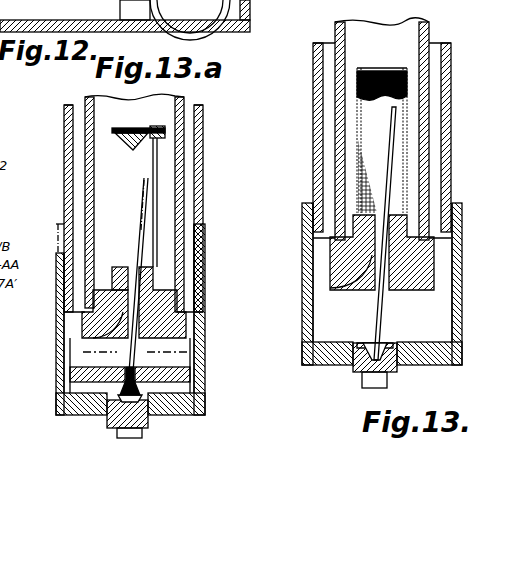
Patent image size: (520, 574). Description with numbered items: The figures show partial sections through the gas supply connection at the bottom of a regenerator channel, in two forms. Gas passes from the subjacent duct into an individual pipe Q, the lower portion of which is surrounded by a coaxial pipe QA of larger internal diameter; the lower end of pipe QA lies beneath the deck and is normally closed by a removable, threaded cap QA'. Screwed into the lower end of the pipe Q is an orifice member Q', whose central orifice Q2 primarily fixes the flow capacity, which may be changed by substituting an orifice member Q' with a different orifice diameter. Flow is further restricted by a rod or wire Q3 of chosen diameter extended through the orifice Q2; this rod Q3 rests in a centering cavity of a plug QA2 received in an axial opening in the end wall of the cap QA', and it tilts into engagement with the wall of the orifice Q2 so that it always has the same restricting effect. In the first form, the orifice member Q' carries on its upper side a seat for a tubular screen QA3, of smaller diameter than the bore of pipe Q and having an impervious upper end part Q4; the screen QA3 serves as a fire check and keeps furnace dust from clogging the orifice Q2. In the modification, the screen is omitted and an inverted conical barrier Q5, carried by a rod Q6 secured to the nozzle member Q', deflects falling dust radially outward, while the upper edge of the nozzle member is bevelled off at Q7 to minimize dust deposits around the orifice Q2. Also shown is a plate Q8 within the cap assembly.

In FIG. 13A, the pipe Q is at (154, 203).
In FIG. 13, the pipe Q is at (355, 129).
In FIG. 13A, the coaxial pipe QA is at (151, 202).
In FIG. 13, the coaxial pipe QA is at (359, 140).
In FIG. 13A, the removable cap QA' is at (149, 320).
In FIG. 13, the removable cap QA' is at (357, 284).
In FIG. 13A, the plug QA2 is at (112, 428).
In FIG. 13, the plug QA2 is at (352, 375).
In FIG. 13, the tubular screen QA3 is at (357, 119).
In FIG. 13A, the orifice member Q' is at (75, 316).
In FIG. 13, the orifice member Q' is at (322, 252).
In FIG. 13A, the central orifice Q2 is at (93, 340).
In FIG. 13, the central orifice Q2 is at (373, 261).
In FIG. 13A, the rod or wire Q3 is at (131, 352).
In FIG. 13, the rod or wire Q3 is at (377, 319).
In FIG. 13, the impervious upper end part Q4 is at (383, 67).
In FIG. 13A, the barrier Q5 is at (128, 128).
In FIG. 13A, the rod Q6 is at (150, 171).
In FIG. 13A, the bevel Q7 is at (118, 266).
In FIG. 13A, the plate Q8 is at (180, 372).